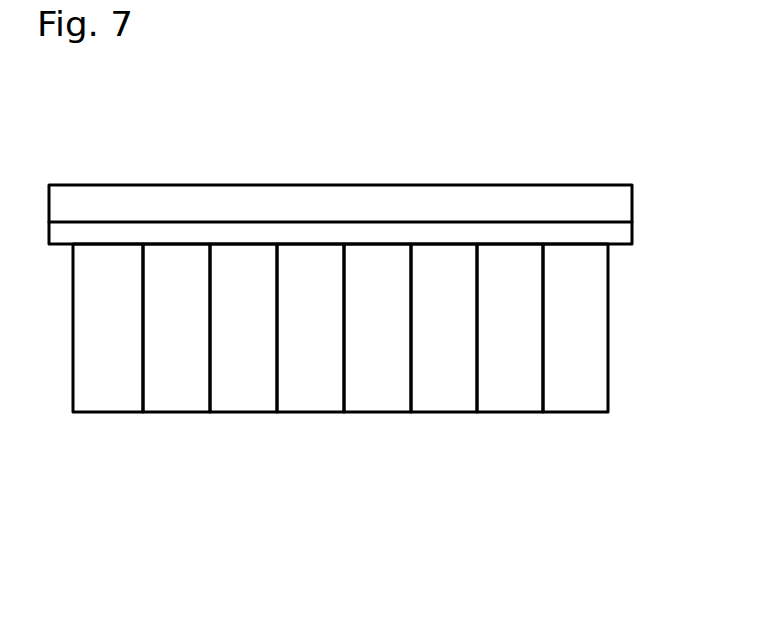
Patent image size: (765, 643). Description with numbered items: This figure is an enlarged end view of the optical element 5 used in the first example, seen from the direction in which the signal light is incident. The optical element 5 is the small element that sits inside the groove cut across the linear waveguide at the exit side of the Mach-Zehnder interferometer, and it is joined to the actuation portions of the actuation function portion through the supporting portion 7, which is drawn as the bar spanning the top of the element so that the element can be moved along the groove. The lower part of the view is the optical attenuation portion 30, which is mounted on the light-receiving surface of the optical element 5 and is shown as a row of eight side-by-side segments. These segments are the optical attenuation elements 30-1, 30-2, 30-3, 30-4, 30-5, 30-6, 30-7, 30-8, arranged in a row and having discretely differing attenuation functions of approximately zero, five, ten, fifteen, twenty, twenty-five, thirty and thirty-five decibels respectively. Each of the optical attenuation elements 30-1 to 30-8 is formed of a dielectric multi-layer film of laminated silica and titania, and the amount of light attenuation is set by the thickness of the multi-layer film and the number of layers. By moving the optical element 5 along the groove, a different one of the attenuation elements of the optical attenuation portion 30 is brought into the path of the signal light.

The supporting portion 7 is at (295, 202).
The optical element 5 is at (358, 431).
The optical attenuation portion 30 is at (358, 431).
The optical attenuation element 30-1 is at (110, 395).
The optical attenuation element 30-2 is at (188, 392).
The optical attenuation element 30-3 is at (250, 395).
The optical attenuation element 30-4 is at (313, 392).
The optical attenuation element 30-5 is at (385, 393).
The optical attenuation element 30-6 is at (445, 395).
The optical attenuation element 30-7 is at (507, 397).
The optical attenuation element 30-8 is at (624, 379).